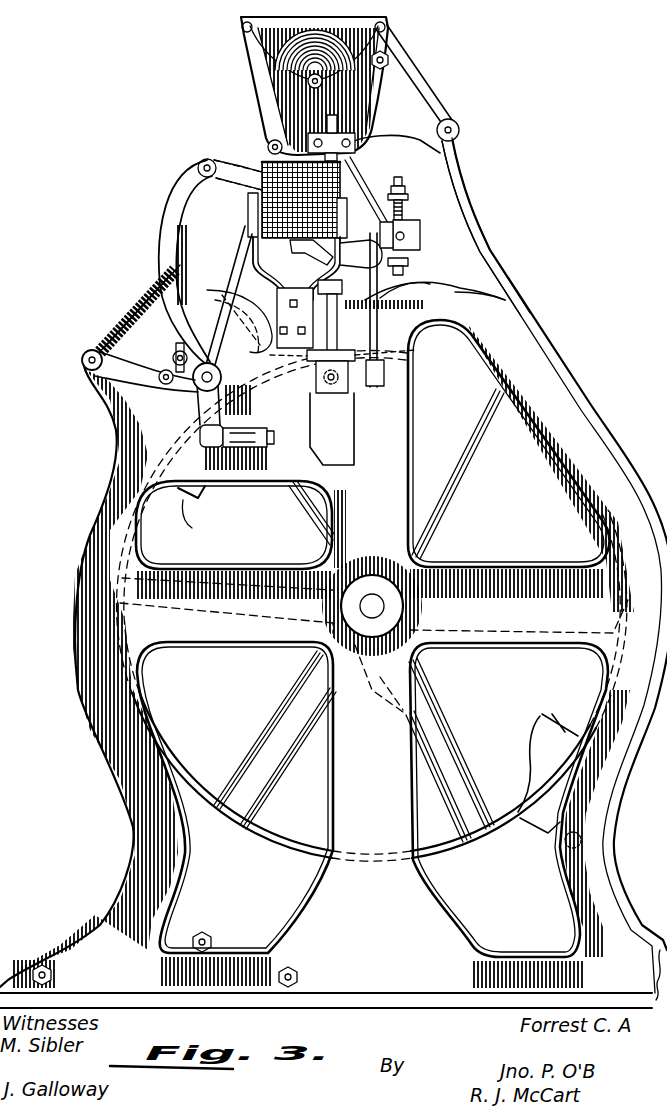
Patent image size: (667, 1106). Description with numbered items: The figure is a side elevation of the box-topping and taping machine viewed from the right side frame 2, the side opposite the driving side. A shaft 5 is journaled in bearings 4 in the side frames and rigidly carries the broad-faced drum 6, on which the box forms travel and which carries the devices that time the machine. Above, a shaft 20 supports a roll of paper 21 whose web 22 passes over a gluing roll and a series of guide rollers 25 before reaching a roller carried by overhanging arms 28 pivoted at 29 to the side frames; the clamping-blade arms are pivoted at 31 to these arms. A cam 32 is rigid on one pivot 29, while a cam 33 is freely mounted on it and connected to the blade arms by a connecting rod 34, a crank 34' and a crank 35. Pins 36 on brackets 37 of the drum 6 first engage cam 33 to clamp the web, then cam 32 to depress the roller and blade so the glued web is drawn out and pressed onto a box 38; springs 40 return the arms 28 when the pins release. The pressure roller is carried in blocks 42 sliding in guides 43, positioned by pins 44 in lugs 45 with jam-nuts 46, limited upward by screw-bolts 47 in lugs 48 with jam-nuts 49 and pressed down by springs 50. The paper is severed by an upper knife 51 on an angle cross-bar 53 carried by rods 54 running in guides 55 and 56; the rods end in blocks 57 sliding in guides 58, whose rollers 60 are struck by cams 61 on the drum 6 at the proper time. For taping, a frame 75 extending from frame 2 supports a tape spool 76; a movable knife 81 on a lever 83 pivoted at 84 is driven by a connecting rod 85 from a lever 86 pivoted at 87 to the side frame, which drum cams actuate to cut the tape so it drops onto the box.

The right side frame 2 is at (333, 562).
The bearings 4 is at (355, 605).
The shaft 5 is at (374, 604).
The drum 6 is at (300, 856).
The shaft 20 is at (330, 88).
The roll of paper 21 is at (376, 67).
The web 22 is at (250, 100).
The guide rollers 25 is at (458, 128).
The overhanging arms 28 is at (167, 207).
The pivots 29 is at (226, 382).
The pivot 31 is at (198, 166).
The cam 32 is at (267, 297).
The cam 33 is at (258, 322).
The connecting rod 34 is at (224, 325).
The crank 34' is at (230, 186).
The crank 35 is at (176, 355).
The pins 36 is at (160, 375).
The brackets 37 is at (177, 406).
The box 38 is at (238, 450).
The springs 40 is at (152, 310).
The blocks 42 is at (420, 230).
The guides 43 is at (420, 240).
The pins 44 is at (445, 284).
The lugs 45 is at (408, 262).
The jam-nuts 46 is at (405, 271).
The screw-bolts 47 is at (403, 180).
The lugs 48 is at (408, 198).
The jam-nuts 49 is at (405, 190).
The springs 50 is at (403, 212).
The knife 51 is at (348, 322).
The angle cross-bar 53 is at (462, 150).
The rods 54 is at (315, 90).
The guide 55 is at (356, 140).
The guide 56 is at (340, 290).
The blocks 57 is at (310, 358).
The guides 58 is at (332, 429).
The rollers 60 is at (318, 380).
The cams 61 is at (540, 714).
The frame 75 is at (274, 286).
The tape spool 76 is at (262, 165).
The movable knife 81 is at (296, 245).
The lever 83 is at (361, 254).
The pivot 84 is at (364, 200).
The connecting rod 85 is at (410, 284).
The lever 86 is at (386, 374).
The pivot 87 is at (374, 392).